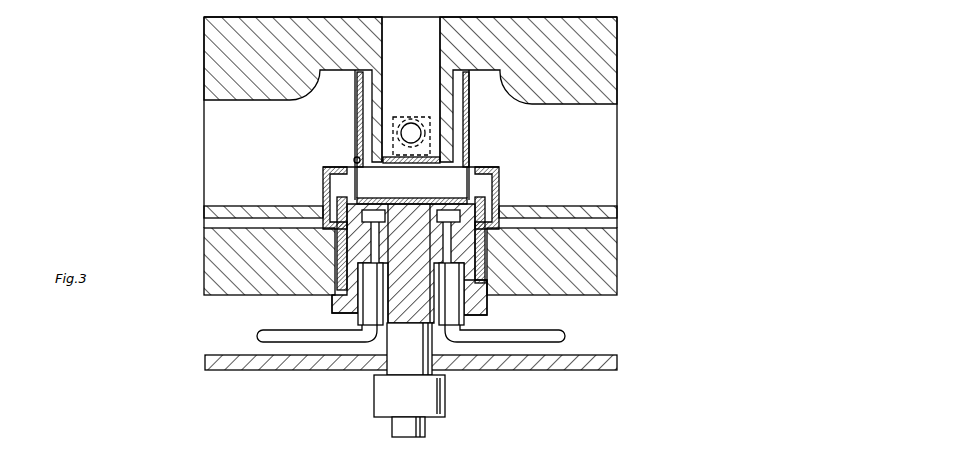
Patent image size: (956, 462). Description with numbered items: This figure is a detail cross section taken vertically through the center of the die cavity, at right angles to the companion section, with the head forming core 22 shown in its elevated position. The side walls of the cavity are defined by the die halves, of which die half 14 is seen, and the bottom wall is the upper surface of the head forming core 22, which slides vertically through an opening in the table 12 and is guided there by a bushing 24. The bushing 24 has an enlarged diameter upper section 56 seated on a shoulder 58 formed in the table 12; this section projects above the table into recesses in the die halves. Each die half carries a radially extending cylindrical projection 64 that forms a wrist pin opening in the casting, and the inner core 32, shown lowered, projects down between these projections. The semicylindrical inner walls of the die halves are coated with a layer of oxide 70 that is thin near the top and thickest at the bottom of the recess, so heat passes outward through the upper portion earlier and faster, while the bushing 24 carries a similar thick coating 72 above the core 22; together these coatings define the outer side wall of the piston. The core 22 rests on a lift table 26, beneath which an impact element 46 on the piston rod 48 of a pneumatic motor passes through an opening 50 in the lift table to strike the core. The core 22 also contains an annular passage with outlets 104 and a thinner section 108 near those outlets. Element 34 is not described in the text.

The table 12 is at (617, 253).
The die half 14 is at (617, 155).
The head forming core 22 is at (416, 305).
The bushing 24 is at (488, 310).
The lift table 26 is at (567, 371).
The inner core 32 is at (408, 166).
The upper plate 34 is at (617, 48).
The impact element 46 is at (445, 402).
The piston rod 48 is at (425, 430).
The opening 50 is at (462, 93).
The enlarged diameter upper section 56 is at (333, 238).
The shoulder 58 is at (488, 239).
The cylindrical projection 64 is at (401, 121).
The layer of oxide 70 is at (358, 108).
The coating 72 is at (354, 160).
The outlets 104 is at (433, 246).
The thinner section 108 is at (373, 209).